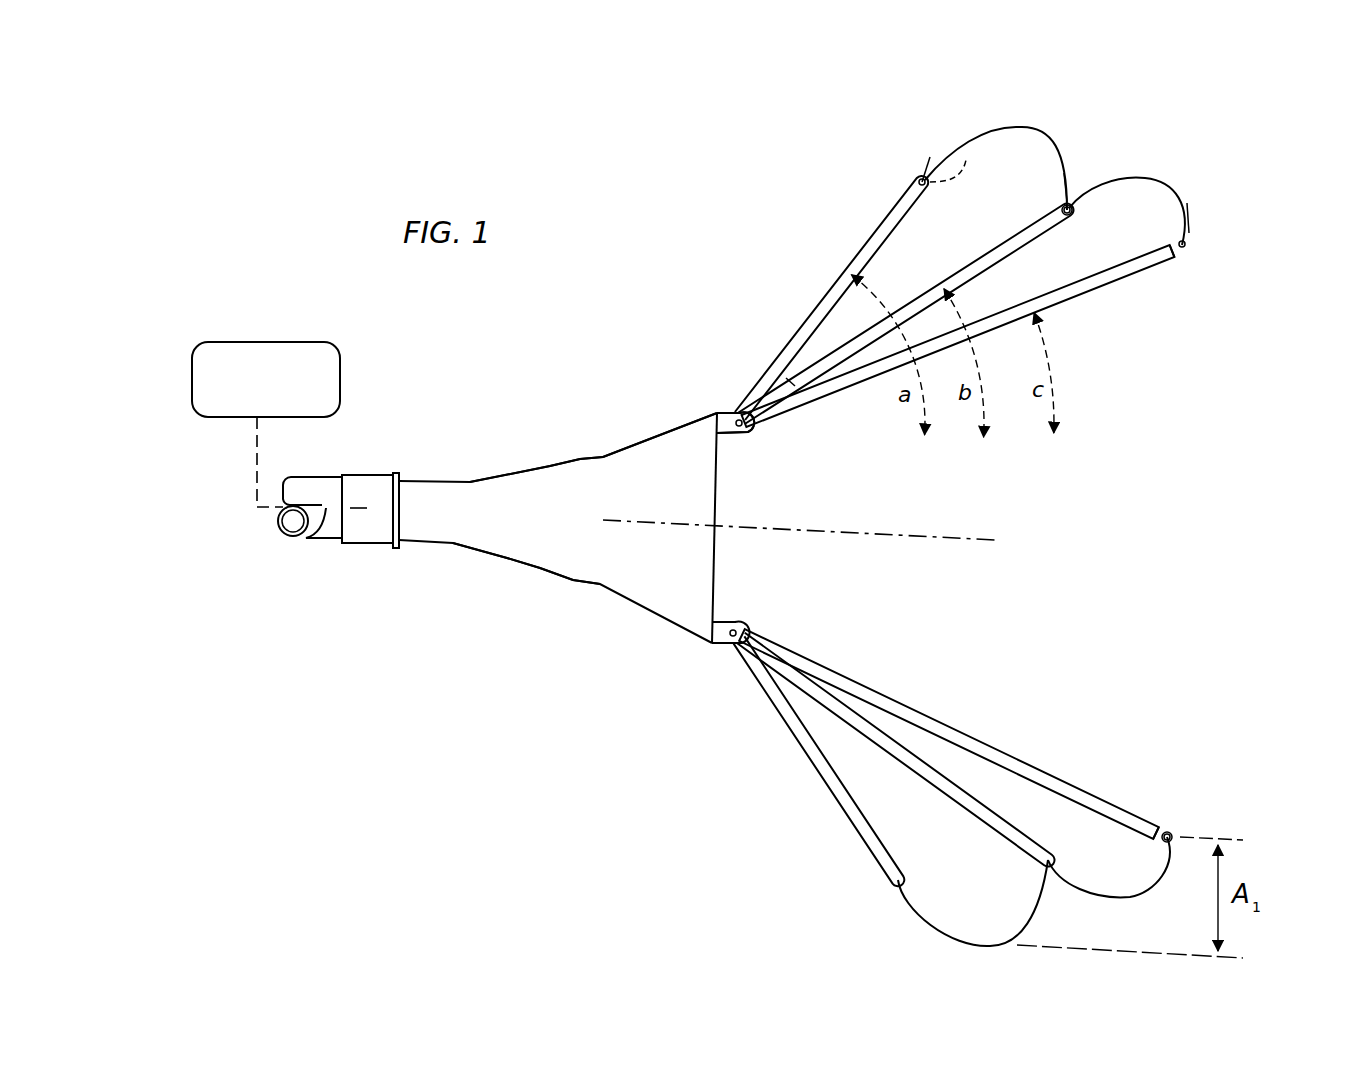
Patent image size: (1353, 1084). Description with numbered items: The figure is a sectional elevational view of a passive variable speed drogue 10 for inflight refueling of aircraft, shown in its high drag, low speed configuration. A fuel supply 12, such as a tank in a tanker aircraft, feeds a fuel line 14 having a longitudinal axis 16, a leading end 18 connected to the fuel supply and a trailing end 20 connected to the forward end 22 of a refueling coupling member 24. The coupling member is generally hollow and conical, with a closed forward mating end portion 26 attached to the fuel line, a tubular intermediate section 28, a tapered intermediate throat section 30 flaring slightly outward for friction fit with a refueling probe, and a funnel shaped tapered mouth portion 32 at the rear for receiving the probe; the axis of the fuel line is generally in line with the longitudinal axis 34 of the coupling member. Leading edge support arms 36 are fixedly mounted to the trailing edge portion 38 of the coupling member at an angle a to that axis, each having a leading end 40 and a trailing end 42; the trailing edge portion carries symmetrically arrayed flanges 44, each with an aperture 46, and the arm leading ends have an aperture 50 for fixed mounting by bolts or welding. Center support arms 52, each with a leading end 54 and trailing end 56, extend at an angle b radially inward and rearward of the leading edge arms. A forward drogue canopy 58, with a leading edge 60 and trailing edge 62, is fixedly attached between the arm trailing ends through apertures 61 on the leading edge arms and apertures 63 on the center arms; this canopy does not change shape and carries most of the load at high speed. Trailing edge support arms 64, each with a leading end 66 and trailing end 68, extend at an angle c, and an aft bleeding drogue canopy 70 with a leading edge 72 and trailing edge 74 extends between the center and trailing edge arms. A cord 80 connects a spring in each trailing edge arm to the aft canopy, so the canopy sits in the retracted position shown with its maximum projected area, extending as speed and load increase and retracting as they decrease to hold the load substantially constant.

The passive variable speed drogue 10 is at (746, 282).
The fuel supply 12 is at (267, 342).
The fuel line 14 is at (323, 473).
The longitudinal axis 16 is at (323, 540).
The leading end 18 is at (257, 418).
The trailing end 20 is at (333, 545).
The forward end 22 is at (365, 464).
The refueling coupling member 24 is at (562, 536).
The forward mating end portion 26 is at (397, 470).
The tubular intermediate section 28 is at (443, 545).
The tapered intermediate throat section 30 is at (550, 462).
The tapered mouth portion 32 is at (663, 432).
The longitudinal axis 34 is at (875, 532).
The leading edge support arms 36 is at (857, 253).
The trailing edge portion 38 is at (712, 410).
The leading end 40 is at (743, 393).
The trailing end 42 is at (907, 180).
The flanges 44 is at (735, 433).
The aperture 46 is at (735, 620).
The aperture 50 is at (752, 428).
The center support arms 52 is at (947, 283).
The leading end 54 is at (795, 380).
The trailing end 56 is at (1032, 223).
The forward drogue canopy 58 is at (1040, 128).
The leading edge 60 is at (930, 157).
The apertures 61 is at (965, 158).
The trailing edge 62 is at (1068, 182).
The apertures 63 is at (1077, 215).
The trailing edge support arms 64 is at (1083, 277).
The leading end 66 is at (797, 658).
The trailing end 68 is at (1143, 813).
The aft bleeding drogue canopy 70 is at (1190, 207).
The leading edge 72 is at (1090, 180).
The trailing edge 74 is at (1187, 242).
The cord 80 is at (1183, 252).